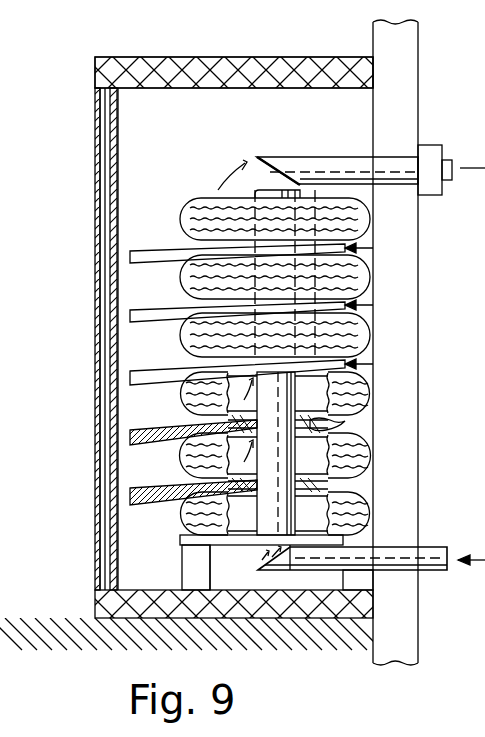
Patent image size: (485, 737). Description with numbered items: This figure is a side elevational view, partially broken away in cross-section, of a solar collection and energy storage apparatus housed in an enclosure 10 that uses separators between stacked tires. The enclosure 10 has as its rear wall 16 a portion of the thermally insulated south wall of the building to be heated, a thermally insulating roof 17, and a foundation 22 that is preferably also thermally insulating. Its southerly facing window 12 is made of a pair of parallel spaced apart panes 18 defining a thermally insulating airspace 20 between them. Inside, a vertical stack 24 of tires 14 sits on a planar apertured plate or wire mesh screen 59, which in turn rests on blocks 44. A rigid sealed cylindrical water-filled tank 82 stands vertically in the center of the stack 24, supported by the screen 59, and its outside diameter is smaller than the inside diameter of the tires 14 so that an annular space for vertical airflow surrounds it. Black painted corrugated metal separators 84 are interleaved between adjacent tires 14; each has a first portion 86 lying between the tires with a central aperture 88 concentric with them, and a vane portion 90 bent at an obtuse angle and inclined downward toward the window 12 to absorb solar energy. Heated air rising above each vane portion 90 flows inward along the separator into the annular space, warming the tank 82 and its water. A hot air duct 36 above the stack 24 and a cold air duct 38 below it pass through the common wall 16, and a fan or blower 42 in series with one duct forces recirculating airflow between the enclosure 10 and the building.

The enclosure 10 is at (160, 48).
The window 12 is at (92, 195).
The tires 14 is at (356, 226).
The rear wall 16 is at (395, 94).
The roof 17 is at (268, 66).
The panes 18 is at (118, 300).
The airspace 20 is at (103, 118).
The foundation 22 is at (108, 606).
The vertical stack 24 is at (203, 194).
The hot air duct 36 is at (338, 166).
The cold air duct 38 is at (430, 553).
The fan or blower 42 is at (430, 150).
The blocks 44 is at (196, 561).
The planar apertured plate or wire mesh screen 59 is at (237, 546).
The tank 82 is at (300, 504).
The separators 84 is at (145, 300).
The first portion 86 is at (360, 248).
The central aperture 88 is at (345, 422).
The vane portion 90 is at (133, 373).